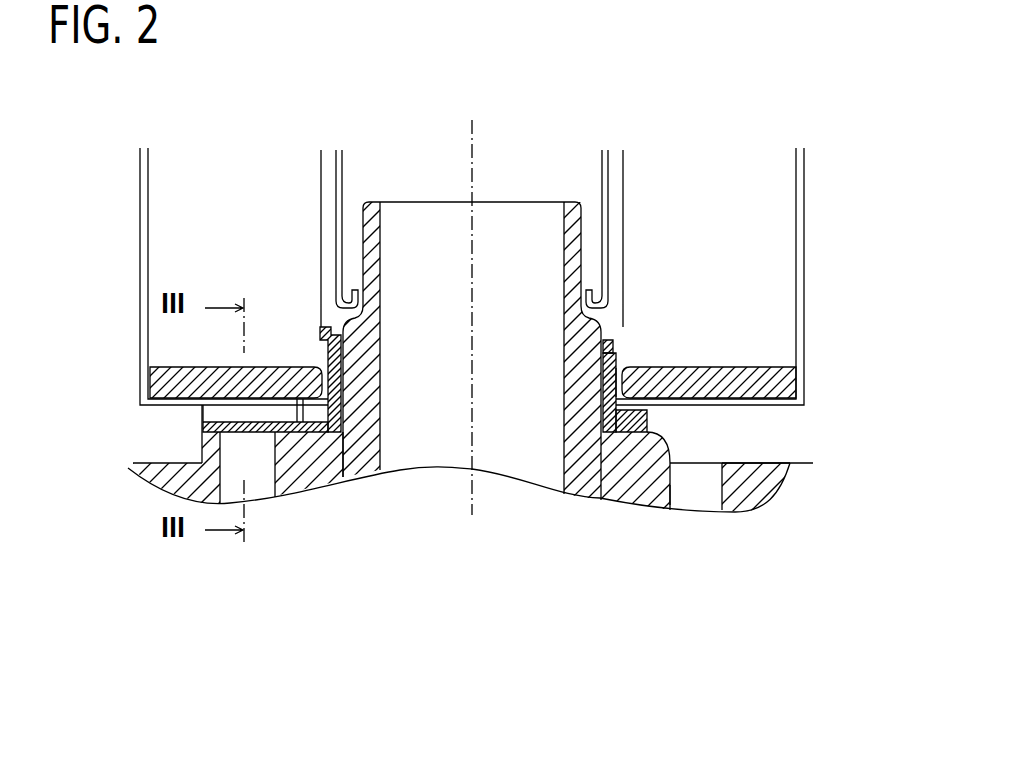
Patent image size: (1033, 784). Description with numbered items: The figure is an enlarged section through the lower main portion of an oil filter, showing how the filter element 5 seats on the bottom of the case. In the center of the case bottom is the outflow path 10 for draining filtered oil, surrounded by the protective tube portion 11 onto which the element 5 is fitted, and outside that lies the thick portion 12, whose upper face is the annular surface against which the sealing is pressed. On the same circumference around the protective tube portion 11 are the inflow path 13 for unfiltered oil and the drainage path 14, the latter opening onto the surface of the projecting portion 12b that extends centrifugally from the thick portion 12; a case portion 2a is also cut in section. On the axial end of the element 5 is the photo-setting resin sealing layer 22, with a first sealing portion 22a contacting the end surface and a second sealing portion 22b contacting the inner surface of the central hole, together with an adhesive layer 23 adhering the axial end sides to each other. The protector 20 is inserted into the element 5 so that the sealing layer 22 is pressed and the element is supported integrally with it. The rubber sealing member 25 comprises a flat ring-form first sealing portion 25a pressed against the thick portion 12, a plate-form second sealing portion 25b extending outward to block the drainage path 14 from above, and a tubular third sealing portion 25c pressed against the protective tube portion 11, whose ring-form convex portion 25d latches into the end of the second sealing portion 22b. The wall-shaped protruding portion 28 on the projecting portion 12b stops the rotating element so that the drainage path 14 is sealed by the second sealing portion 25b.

The filter element 5 is at (127, 230).
The protector 20 is at (336, 170).
The protective tube portion 11 is at (567, 203).
The sealing member 25 is at (333, 321).
The third sealing portion 25c is at (610, 342).
The ring-form convex portion 25d is at (623, 367).
The adhesive layer 23 is at (782, 381).
The protruding portion 28 is at (215, 413).
The second sealing portion 25b is at (203, 425).
The projecting portion 12b is at (142, 468).
The drainage path 14 is at (275, 497).
The rotor shaft 2a is at (342, 472).
The outflow path 10 is at (402, 446).
The first sealing portion 25a is at (632, 442).
The thick portion 12 is at (637, 440).
The inflow path 13 is at (697, 492).
The second sealing portion 22b is at (618, 380).
The first sealing portion 22a is at (670, 484).
The sealing layer 22 is at (863, 470).